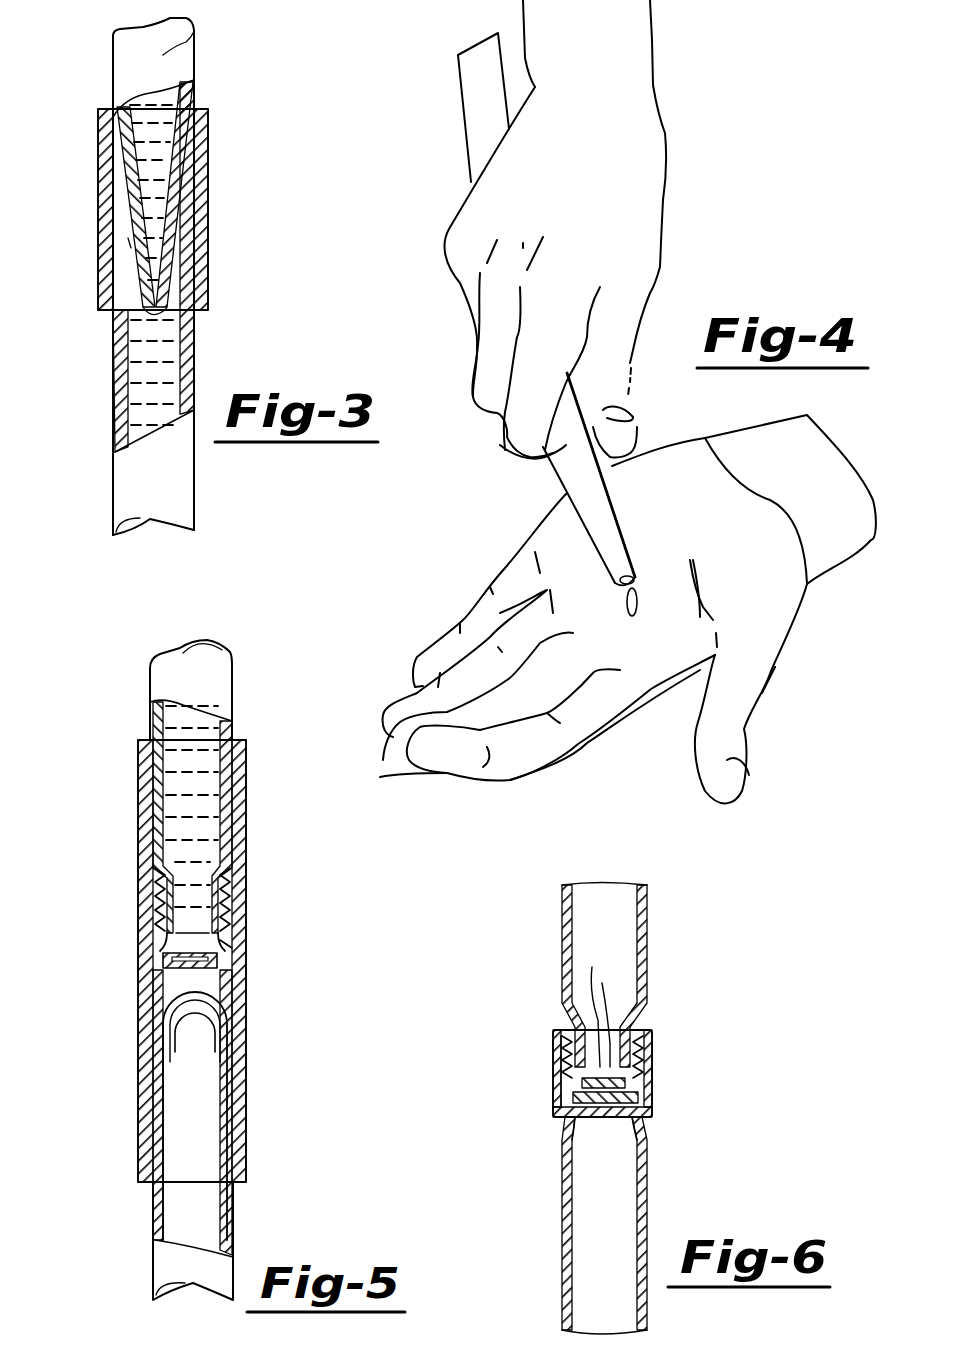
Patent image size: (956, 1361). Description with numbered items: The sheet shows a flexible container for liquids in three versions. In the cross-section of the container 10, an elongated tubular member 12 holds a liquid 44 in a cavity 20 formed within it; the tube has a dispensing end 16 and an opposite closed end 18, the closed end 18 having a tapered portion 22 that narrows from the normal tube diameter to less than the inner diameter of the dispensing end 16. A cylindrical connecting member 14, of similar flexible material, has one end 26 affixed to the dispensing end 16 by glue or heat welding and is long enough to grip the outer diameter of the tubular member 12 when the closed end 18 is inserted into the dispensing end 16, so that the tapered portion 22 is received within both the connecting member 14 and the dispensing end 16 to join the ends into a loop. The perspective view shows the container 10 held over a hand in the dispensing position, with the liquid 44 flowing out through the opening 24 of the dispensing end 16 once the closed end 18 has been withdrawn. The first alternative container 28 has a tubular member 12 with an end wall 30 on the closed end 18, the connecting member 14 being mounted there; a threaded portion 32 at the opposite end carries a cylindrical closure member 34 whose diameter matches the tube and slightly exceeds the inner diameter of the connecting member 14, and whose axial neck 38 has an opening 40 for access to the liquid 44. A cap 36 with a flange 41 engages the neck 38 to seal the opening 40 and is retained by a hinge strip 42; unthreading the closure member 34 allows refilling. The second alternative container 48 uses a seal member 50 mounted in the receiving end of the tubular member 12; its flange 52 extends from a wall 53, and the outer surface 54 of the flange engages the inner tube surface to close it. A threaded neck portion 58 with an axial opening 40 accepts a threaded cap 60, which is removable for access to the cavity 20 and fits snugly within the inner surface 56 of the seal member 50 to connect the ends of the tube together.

In FIG. 3, the container 10 is at (214, 392).
In FIG. 4, the container 10 is at (445, 152).
In FIG. 3, the tubular member 12 is at (175, 480).
In FIG. 5, the tubular member 12 is at (233, 700).
In FIG. 6, the tubular member 12 is at (660, 1226).
In FIG. 3, the connecting member 14 is at (210, 209).
In FIG. 5, the connecting member 14 is at (248, 1127).
In FIG. 3, the dispensing end 16 is at (198, 357).
In FIG. 5, the dispensing end 16 is at (227, 833).
In FIG. 3, the closed end 18 is at (128, 238).
In FIG. 5, the closed end 18 is at (233, 1040).
In FIG. 3, the cavity 20 is at (150, 118).
In FIG. 5, the cavity 20 is at (193, 788).
In FIG. 6, the cavity 20 is at (618, 918).
In FIG. 3, the tapered portion 22 is at (165, 57).
In FIG. 4, the tapered portion 22 is at (568, 454).
In FIG. 3, the opening 24 is at (148, 340).
In FIG. 4, the opening 24 is at (638, 578).
In FIG. 3, the one end 26 is at (206, 264).
In FIG. 5, the container 28 is at (128, 1028).
In FIG. 5, the end wall 30 is at (203, 1015).
In FIG. 5, the threaded portion 32 is at (160, 870).
In FIG. 5, the closure member 34 is at (232, 890).
In FIG. 5, the cap 36 is at (183, 970).
In FIG. 5, the neck 38 is at (168, 940).
In FIG. 5, the opening 40 is at (190, 937).
In FIG. 6, the opening 40 is at (597, 1005).
In FIG. 5, the flange 41 is at (180, 963).
In FIG. 5, the hinge strip 42 is at (233, 963).
In FIG. 3, the liquid 44 is at (148, 176).
In FIG. 4, the liquid 44 is at (640, 598).
In FIG. 5, the liquid 44 is at (183, 740).
In FIG. 6, the container 48 is at (785, 1057).
In FIG. 6, the seal member 50 is at (661, 1080).
In FIG. 6, the flange 52 is at (653, 1047).
In FIG. 6, the wall 53 is at (608, 1120).
In FIG. 6, the outer surface 54 is at (652, 1100).
In FIG. 6, the inner surface 56 is at (587, 1120).
In FIG. 6, the threaded neck portion 58 is at (617, 1023).
In FIG. 6, the cap 60 is at (553, 1050).